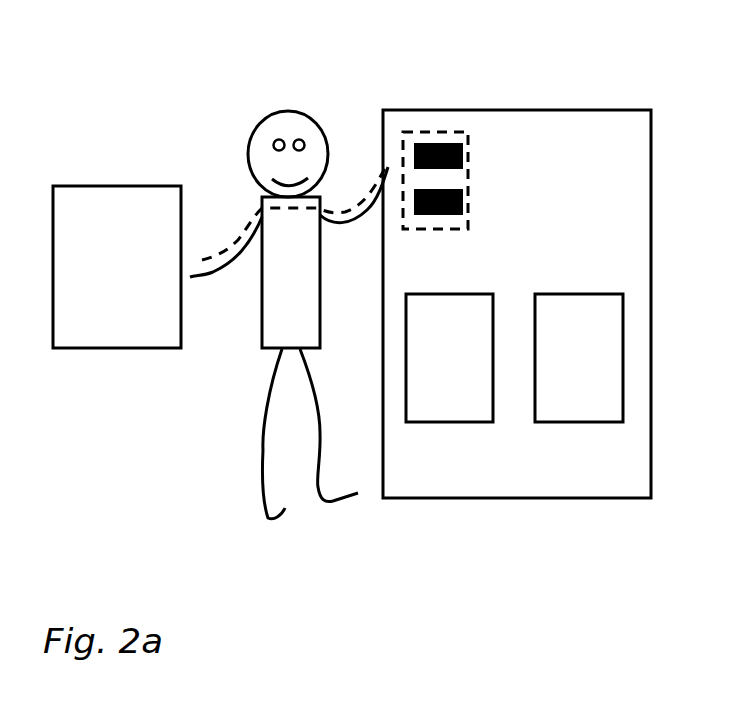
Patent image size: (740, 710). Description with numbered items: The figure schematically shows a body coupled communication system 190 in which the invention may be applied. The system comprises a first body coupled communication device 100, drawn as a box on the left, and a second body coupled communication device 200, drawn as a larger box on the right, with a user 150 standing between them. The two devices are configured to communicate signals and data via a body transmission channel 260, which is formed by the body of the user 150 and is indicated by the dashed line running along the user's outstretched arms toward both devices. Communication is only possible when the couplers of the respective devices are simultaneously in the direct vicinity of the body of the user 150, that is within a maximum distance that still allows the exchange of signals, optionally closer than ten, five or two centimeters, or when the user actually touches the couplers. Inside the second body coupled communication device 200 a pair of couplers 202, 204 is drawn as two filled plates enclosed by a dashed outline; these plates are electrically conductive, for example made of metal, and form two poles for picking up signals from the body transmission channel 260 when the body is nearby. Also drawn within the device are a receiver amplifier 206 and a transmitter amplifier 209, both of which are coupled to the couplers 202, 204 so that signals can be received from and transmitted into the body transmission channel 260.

The body coupled communication system 190 is at (115, 49).
The first body coupled communication device 100 is at (117, 267).
The user 150 is at (289, 315).
The body transmission channel 260 is at (362, 190).
The second body coupled communication device 200 is at (517, 304).
The coupler 202 is at (433, 142).
The coupler 204 is at (463, 197).
The receiver amplifier 206 is at (449, 358).
The transmitter amplifier 209 is at (579, 358).